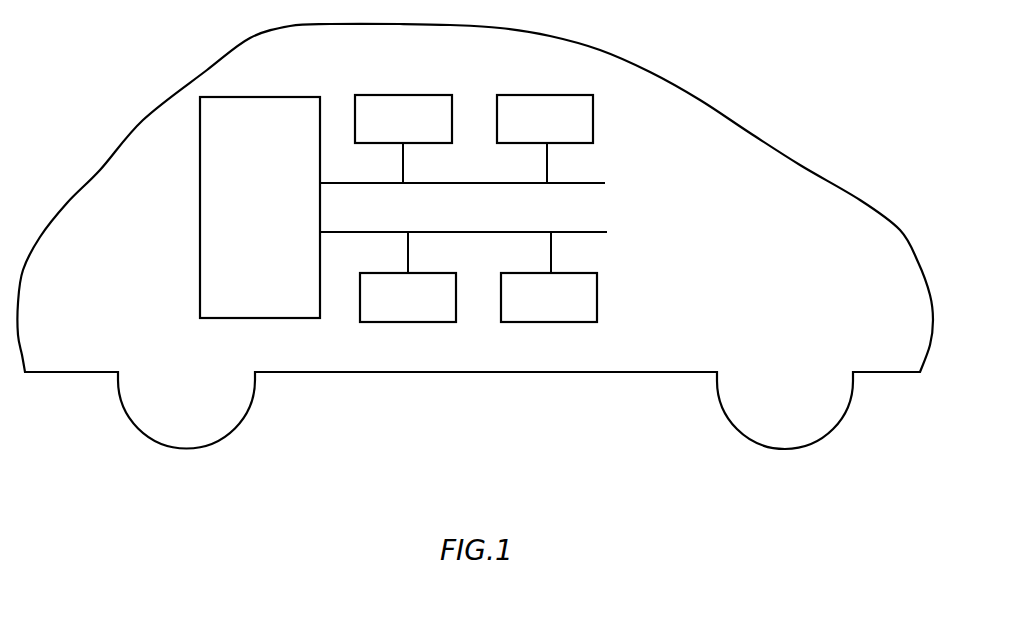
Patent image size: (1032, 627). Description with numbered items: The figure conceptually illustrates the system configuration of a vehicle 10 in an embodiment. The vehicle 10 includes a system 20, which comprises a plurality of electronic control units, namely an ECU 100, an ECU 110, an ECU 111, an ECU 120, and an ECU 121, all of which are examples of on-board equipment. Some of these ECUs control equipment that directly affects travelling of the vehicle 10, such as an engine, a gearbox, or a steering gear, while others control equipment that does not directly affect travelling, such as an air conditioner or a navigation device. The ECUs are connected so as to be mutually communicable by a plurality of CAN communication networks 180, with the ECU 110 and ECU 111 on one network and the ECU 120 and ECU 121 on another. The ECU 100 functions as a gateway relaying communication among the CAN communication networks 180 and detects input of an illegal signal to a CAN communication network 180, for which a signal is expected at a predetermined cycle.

The vehicle 10 is at (652, 72).
The system 20 is at (450, 212).
The ECU 100 is at (254, 97).
The ECU 110 is at (408, 95).
The ECU 111 is at (540, 95).
The ECU 120 is at (420, 322).
The ECU 121 is at (550, 322).
The CAN communication network 180 is at (580, 183).